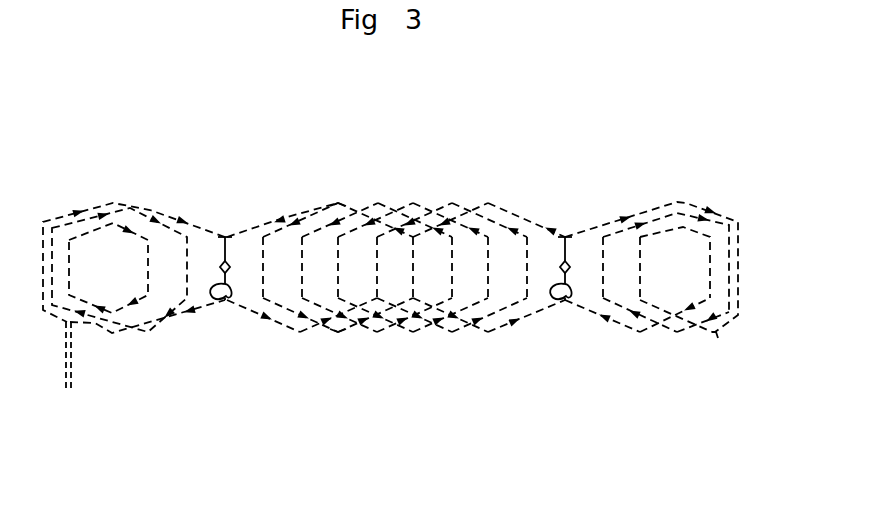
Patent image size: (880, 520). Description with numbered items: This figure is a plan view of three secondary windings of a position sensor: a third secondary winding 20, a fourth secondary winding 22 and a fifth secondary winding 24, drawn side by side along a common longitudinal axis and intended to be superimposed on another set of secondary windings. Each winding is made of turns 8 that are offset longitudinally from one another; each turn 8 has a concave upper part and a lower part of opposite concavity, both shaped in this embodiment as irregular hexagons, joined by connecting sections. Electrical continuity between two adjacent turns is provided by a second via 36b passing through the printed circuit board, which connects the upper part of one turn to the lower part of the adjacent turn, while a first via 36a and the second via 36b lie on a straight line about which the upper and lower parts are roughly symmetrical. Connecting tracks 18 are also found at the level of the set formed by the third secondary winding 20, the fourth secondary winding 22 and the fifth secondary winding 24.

The turn 8 is at (417, 232).
The connecting track 18 is at (68, 362).
The third secondary winding 20 is at (117, 162).
The fourth secondary winding 22 is at (396, 217).
The fifth secondary winding 24 is at (643, 162).
The first via 36a is at (337, 201).
The second via 36b is at (339, 336).